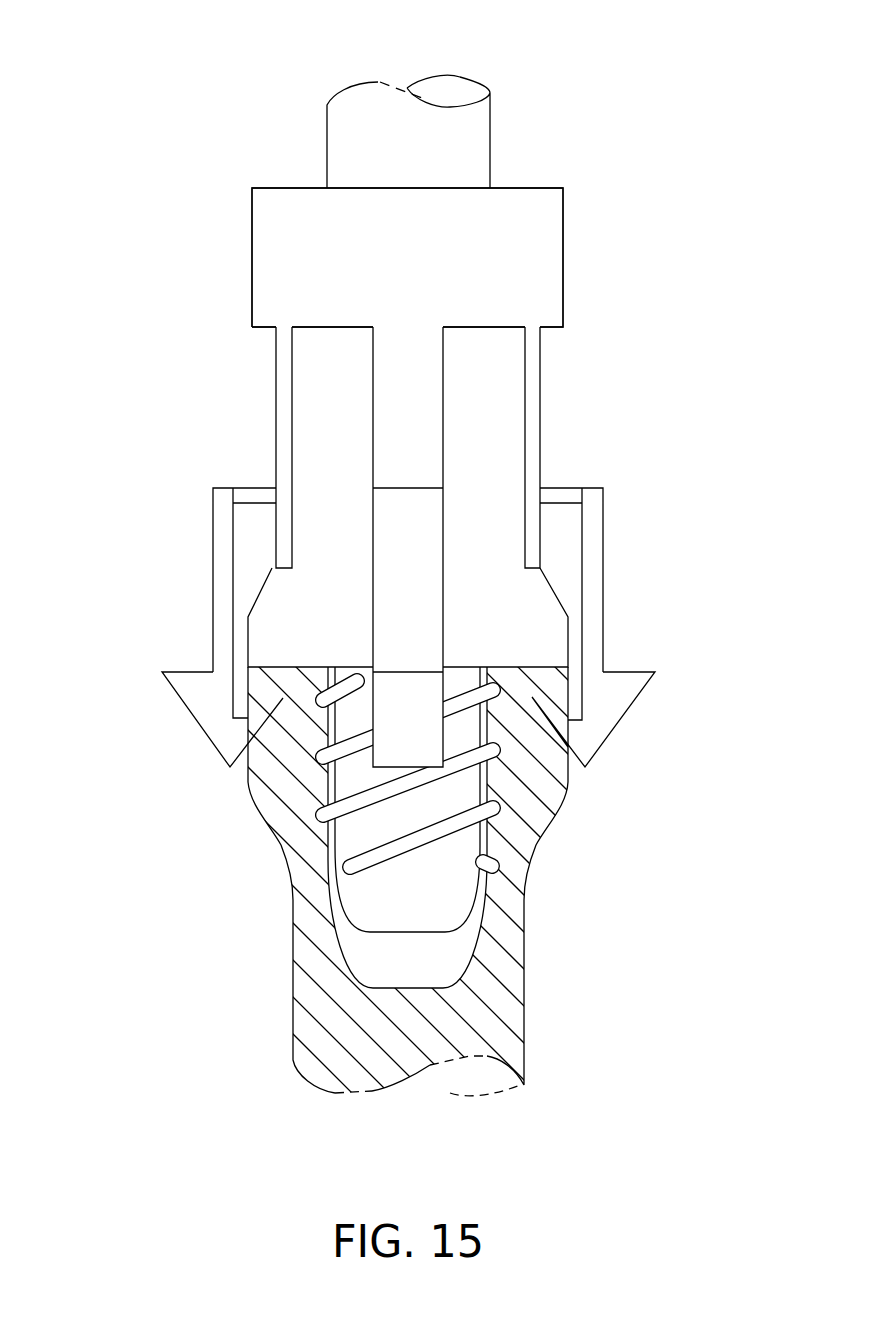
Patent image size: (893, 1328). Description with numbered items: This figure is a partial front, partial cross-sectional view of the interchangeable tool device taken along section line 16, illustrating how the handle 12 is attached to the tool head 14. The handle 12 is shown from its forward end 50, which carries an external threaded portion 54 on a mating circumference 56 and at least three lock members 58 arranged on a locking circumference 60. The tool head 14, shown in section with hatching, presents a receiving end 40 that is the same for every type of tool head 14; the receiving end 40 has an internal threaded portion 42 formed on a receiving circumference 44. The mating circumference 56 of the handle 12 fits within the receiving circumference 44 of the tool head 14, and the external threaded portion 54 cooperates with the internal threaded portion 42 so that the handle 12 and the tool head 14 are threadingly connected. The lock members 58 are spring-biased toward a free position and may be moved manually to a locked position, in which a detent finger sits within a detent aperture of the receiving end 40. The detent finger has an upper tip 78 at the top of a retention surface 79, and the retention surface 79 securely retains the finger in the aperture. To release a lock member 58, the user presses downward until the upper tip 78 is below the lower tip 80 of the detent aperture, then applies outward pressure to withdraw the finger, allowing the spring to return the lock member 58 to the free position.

The handle 12 is at (550, 227).
The tool head 14 is at (510, 925).
The section line 16- 16 is at (407, 80).
The receiving end 40 is at (283, 840).
The internal threaded portion 42 is at (490, 870).
The receiving circumference 44 is at (330, 890).
The forward end 50 is at (267, 207).
The external threaded portion 54 is at (483, 748).
The mating circumference 56 is at (483, 833).
The lock member 58 is at (418, 540).
The locking circumference 60 is at (568, 635).
The upper tip 78 is at (283, 698).
The retention surface 79 is at (283, 698).
The lower tip 80 is at (283, 698).